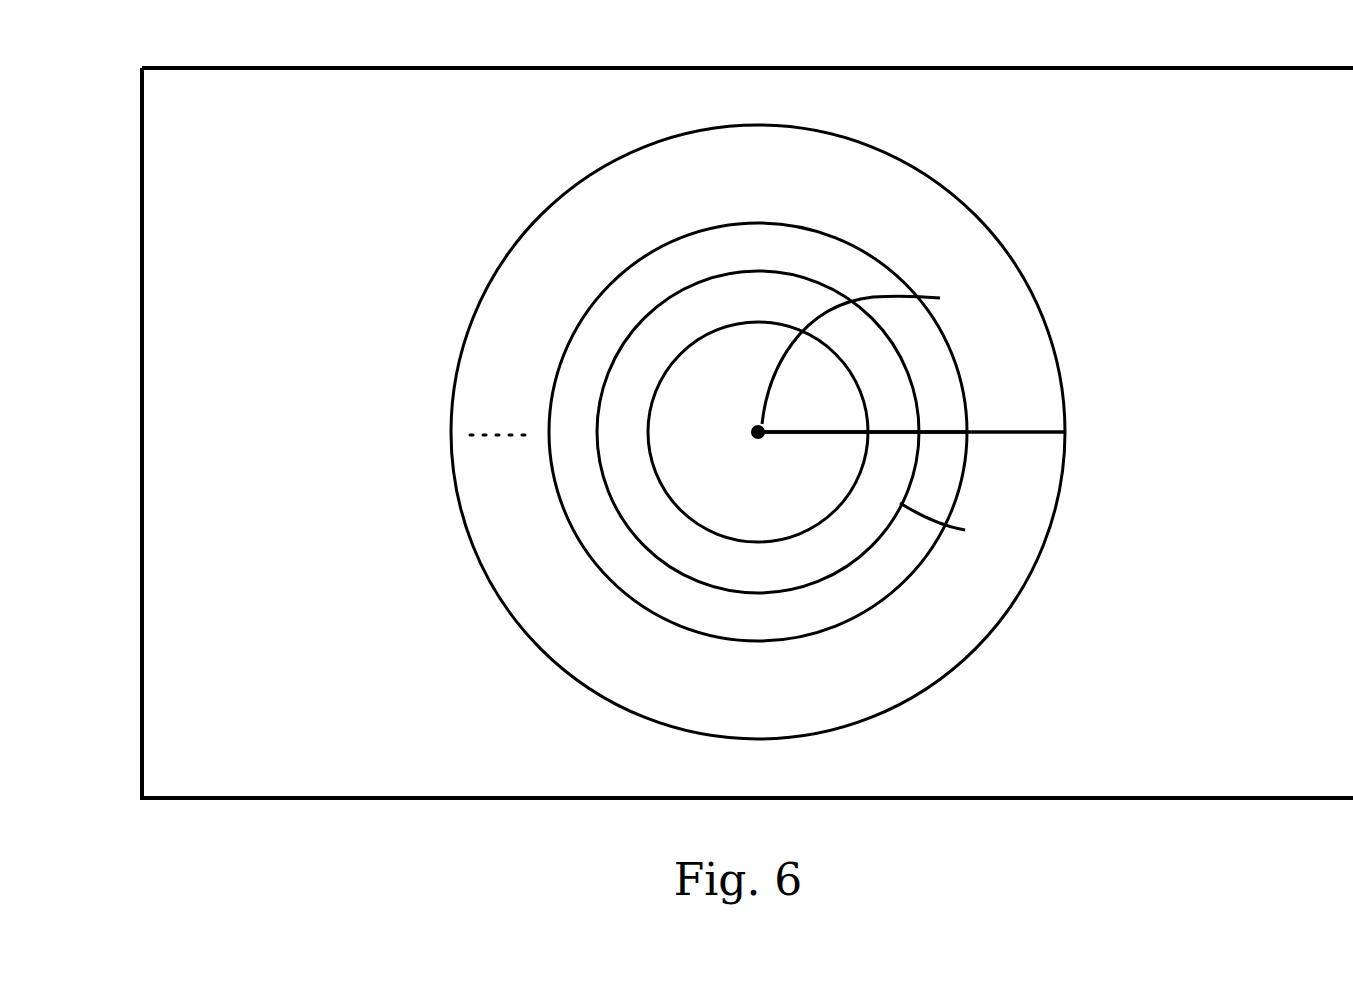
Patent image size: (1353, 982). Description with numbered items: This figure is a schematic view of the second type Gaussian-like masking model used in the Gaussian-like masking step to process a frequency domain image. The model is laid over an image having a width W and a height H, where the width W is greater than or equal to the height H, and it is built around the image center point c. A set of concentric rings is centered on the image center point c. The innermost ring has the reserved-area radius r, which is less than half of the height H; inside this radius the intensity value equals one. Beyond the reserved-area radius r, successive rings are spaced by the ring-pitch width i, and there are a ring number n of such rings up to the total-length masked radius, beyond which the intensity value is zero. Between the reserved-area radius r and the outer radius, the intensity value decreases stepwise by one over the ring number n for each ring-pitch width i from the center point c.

The width W is at (139, 65).
The height H is at (78, 67).
The image center point c is at (742, 441).
The reserved-area radius r is at (765, 428).
The ring-pitch width i is at (916, 429).
The ring number n is at (1063, 445).